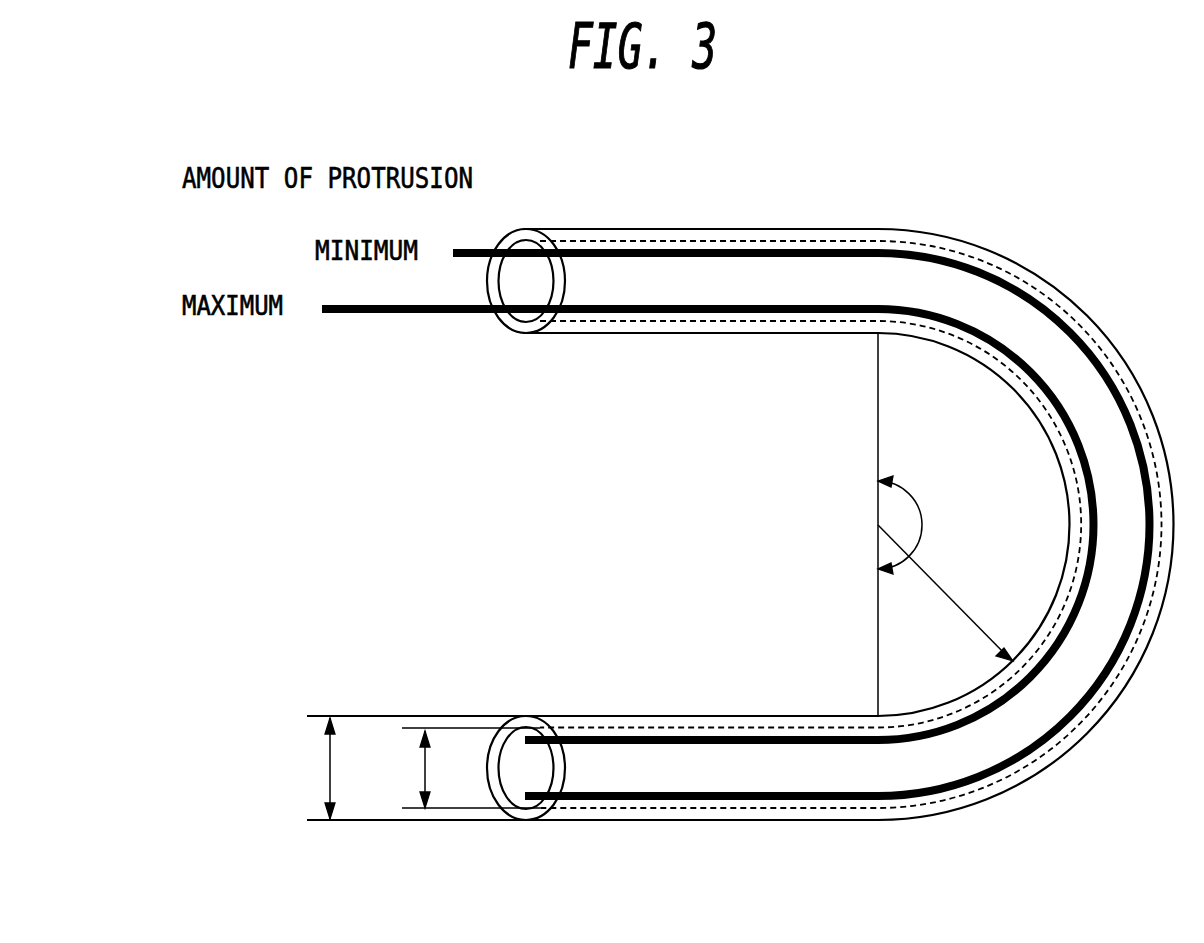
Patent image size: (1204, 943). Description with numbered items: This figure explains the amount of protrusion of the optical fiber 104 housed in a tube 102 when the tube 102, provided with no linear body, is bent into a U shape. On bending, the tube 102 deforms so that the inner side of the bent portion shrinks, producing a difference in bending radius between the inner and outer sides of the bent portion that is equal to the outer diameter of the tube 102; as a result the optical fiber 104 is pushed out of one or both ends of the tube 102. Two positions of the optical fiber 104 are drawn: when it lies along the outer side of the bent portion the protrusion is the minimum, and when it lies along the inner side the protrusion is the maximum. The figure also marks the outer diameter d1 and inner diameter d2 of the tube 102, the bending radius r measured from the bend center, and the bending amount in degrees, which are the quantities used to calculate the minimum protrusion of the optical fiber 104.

The tube 102 is at (908, 229).
The optical fiber 104 is at (795, 250).
The outer diameter of the tube d1 is at (314, 768).
The inner diameter of the tube d2 is at (409, 769).
The bending radius r is at (945, 593).